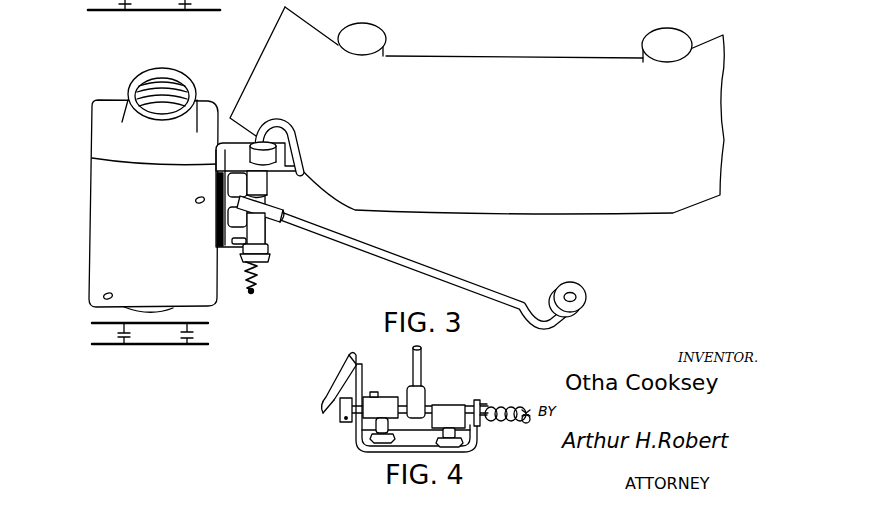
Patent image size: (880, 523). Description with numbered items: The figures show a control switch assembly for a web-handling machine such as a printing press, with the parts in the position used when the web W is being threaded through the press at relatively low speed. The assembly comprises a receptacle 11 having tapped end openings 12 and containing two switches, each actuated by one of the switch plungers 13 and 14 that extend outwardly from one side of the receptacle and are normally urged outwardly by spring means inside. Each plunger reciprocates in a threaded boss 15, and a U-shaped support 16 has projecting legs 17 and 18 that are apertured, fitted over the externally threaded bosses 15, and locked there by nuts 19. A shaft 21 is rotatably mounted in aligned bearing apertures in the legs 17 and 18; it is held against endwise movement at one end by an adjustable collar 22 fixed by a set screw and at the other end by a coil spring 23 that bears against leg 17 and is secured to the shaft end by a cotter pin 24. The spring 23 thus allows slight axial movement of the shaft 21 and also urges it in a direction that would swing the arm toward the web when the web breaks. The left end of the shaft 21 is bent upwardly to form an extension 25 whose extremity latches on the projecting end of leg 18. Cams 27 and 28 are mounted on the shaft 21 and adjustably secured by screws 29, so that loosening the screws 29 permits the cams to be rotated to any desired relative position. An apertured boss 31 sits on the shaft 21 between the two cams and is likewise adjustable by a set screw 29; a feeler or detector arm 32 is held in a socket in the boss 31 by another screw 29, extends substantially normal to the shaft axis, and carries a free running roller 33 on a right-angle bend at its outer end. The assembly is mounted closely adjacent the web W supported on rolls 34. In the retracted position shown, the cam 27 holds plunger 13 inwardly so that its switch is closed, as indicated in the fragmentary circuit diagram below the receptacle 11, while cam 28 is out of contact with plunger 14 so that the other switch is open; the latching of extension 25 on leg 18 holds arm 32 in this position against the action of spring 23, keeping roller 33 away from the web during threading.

In FIG. 3, the receptacle 11 is at (113, 181).
In FIG. 3, the tapped end openings 12 is at (138, 97).
In FIG. 3, the switch plunger 13 is at (257, 194).
In FIG. 4, the switch plunger 13 is at (378, 428).
In FIG. 3, the switch plunger 14 is at (238, 214).
In FIG. 4, the switch plunger 14 is at (462, 436).
In FIG. 4, the threaded boss 15 is at (378, 441).
In FIG. 4, the U-shaped support 16 is at (370, 455).
In FIG. 4, the leg 17 is at (482, 402).
In FIG. 4, the leg 18 is at (341, 389).
In FIG. 4, the nut 19 is at (468, 447).
In FIG. 3, the shaft 21 is at (261, 252).
In FIG. 4, the shaft 21 is at (472, 411).
In FIG. 4, the adjustable collar 22 is at (340, 411).
In FIG. 4, the coil spring 23 is at (493, 410).
In FIG. 3, the cotter pin 24 is at (250, 287).
In FIG. 4, the cotter pin 24 is at (529, 412).
In FIG. 3, the extension 25 is at (290, 141).
In FIG. 4, the extension 25 is at (340, 381).
In FIG. 3, the cam 27 is at (263, 181).
In FIG. 4, the cam 27 is at (380, 408).
In FIG. 3, the cam 28 is at (255, 229).
In FIG. 4, the cam 28 is at (447, 411).
In FIG. 3, the screw 29 is at (251, 208).
In FIG. 4, the screw 29 is at (373, 394).
In FIG. 4, the apertured boss 31 is at (419, 393).
In FIG. 3, the feeler arm 32 is at (361, 240).
In FIG. 4, the feeler arm 32 is at (416, 393).
In FIG. 3, the free running roller 33 is at (590, 298).
In FIG. 3, the rolls 34 is at (366, 38).
In FIG. 3, the web W is at (520, 72).